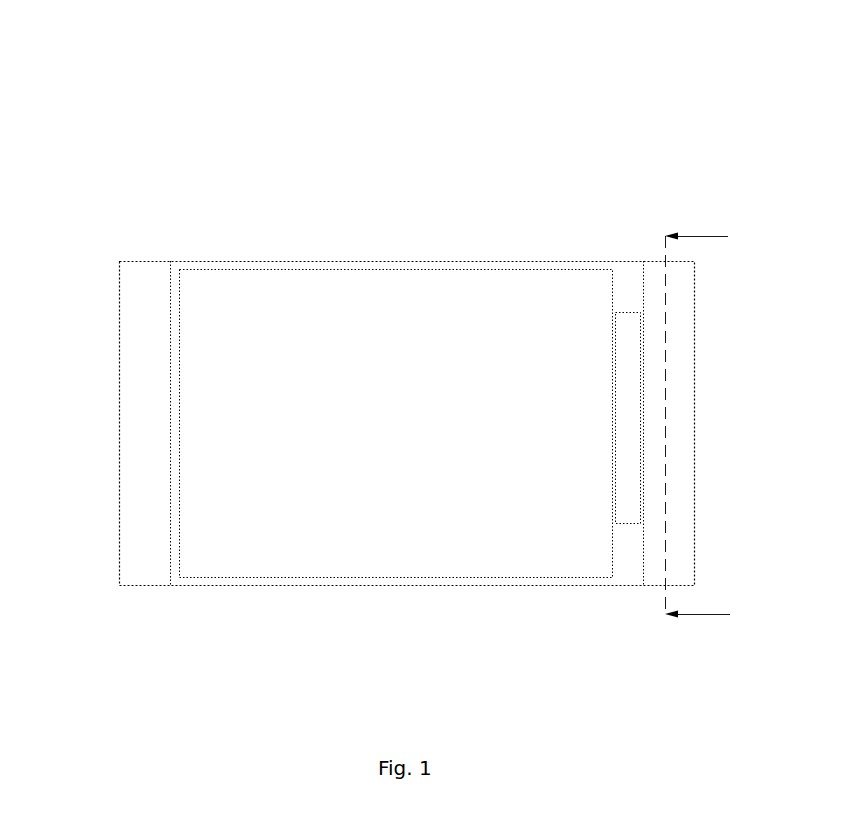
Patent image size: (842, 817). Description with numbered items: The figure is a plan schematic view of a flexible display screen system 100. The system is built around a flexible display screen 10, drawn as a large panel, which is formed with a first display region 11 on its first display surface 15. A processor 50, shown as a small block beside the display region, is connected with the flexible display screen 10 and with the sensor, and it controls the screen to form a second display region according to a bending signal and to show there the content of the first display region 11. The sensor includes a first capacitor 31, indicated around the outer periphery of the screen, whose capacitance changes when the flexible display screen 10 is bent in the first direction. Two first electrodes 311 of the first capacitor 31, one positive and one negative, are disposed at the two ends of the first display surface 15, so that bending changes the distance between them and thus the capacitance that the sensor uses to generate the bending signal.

The flexible display screen system 100 is at (98, 51).
The flexible display screen 10 is at (423, 373).
The first display region 11 is at (338, 293).
The first display surface 15 is at (428, 282).
The processor 50 is at (628, 322).
The first capacitor 31 is at (135, 571).
The first electrodes 311 is at (145, 525).